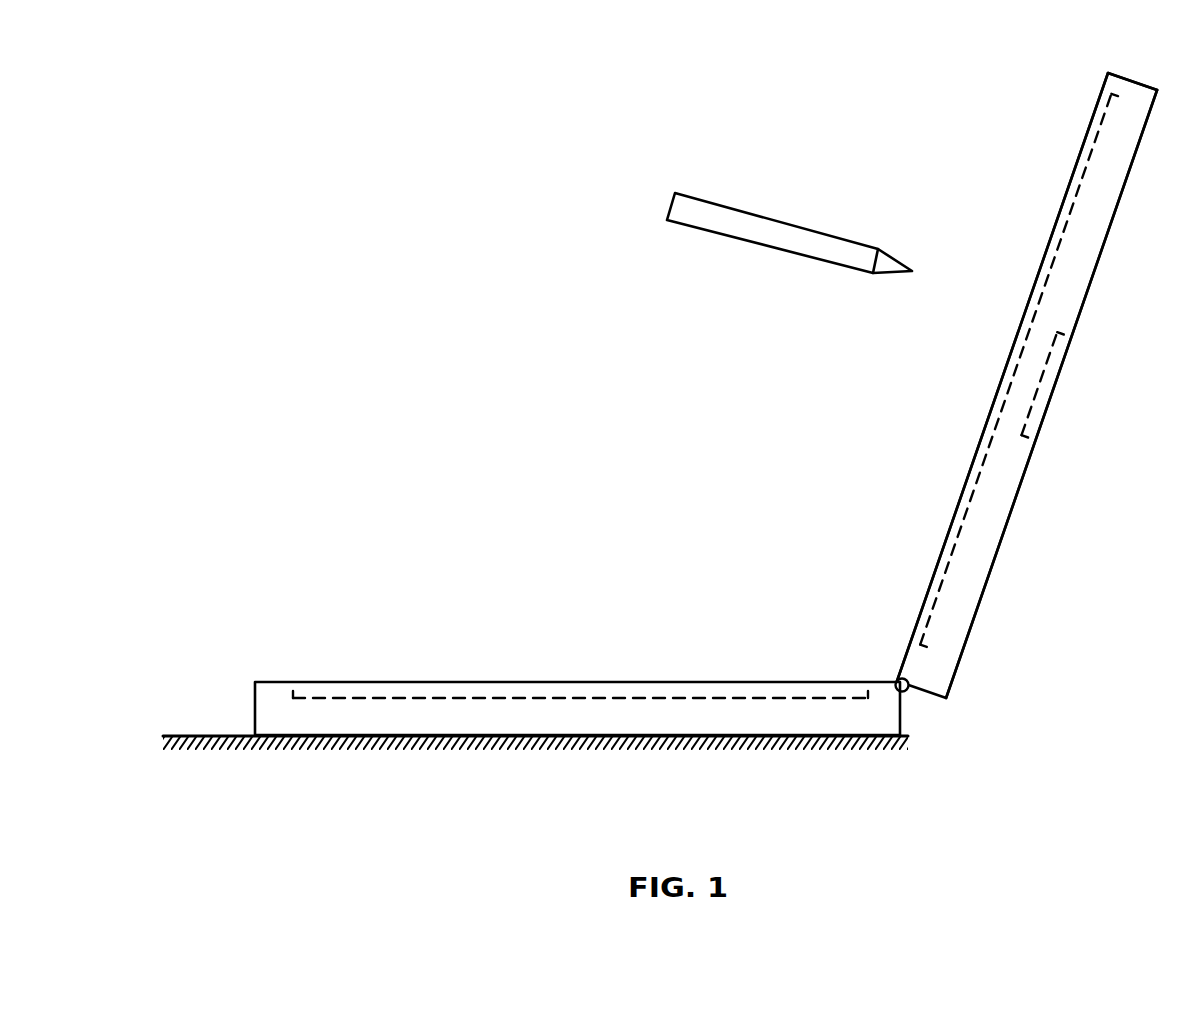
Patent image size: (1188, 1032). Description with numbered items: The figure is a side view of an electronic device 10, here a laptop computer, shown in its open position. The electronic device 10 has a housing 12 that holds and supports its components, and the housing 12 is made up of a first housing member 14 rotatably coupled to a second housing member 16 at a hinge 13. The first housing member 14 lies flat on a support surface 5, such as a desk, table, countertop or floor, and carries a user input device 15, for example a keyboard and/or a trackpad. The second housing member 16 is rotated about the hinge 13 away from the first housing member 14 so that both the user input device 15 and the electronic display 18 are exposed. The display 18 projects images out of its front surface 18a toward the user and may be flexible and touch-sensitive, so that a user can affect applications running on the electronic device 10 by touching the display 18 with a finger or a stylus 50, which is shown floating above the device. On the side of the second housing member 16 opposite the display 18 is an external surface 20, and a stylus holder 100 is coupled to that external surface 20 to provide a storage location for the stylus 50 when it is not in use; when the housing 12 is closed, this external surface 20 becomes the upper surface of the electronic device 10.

The support surface 5 is at (200, 735).
The electronic device 10 is at (622, 388).
The housing 12 is at (980, 648).
The hinge 13 is at (918, 703).
The first housing member 14 is at (267, 680).
The user input device 15 is at (587, 687).
The second housing member 16 is at (1133, 81).
The electronic display 18 is at (1088, 160).
The front surface 18a is at (1069, 185).
The external surface 20 is at (1002, 543).
The stylus 50 is at (773, 220).
The stylus holder 100 is at (1062, 334).